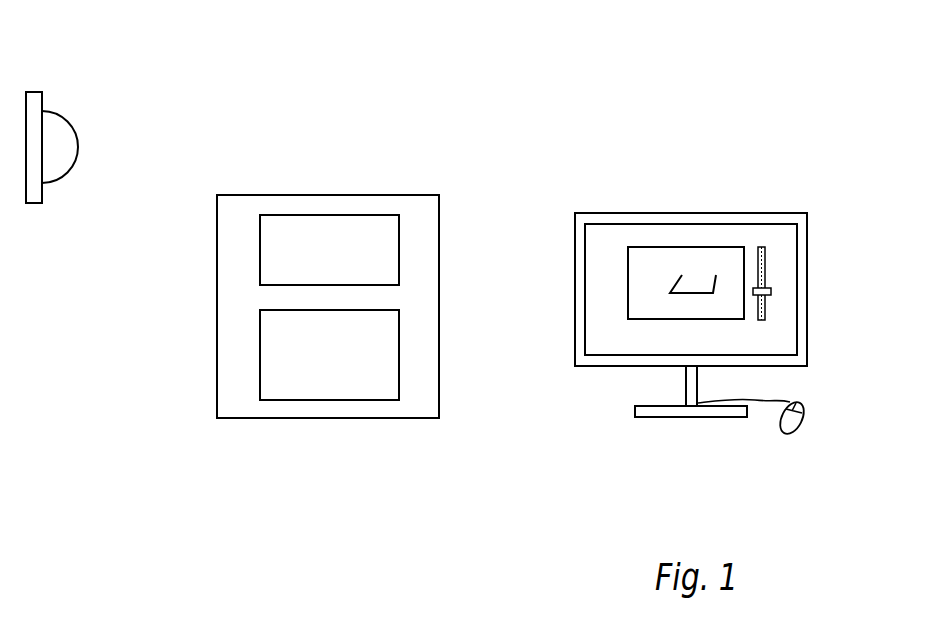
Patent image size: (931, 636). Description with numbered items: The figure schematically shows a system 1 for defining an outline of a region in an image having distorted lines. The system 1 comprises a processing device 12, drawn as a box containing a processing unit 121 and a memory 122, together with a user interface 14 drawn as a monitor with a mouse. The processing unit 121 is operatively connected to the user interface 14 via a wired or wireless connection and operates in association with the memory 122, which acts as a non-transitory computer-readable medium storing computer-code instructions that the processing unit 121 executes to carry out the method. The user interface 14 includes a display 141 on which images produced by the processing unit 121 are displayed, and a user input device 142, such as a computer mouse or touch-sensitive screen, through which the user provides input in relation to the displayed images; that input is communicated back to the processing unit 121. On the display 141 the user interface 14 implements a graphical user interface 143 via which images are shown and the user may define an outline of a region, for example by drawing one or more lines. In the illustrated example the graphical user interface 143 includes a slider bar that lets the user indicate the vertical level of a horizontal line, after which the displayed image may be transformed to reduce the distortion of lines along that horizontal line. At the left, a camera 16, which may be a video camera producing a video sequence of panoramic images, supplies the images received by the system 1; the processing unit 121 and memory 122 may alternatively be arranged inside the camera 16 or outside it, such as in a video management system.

The system 1 is at (292, 74).
The processing device 12 is at (328, 290).
The processing unit 121 is at (345, 340).
The memory 122 is at (345, 250).
The user interface 14 is at (716, 299).
The display 141 is at (772, 213).
The user input device 142 is at (805, 410).
The graphical user interface 143 is at (623, 334).
The camera 16 is at (44, 94).